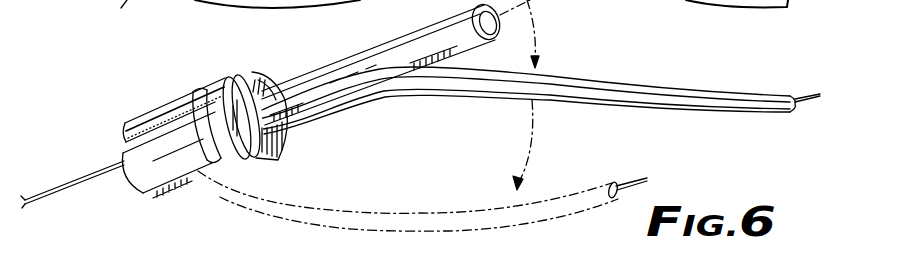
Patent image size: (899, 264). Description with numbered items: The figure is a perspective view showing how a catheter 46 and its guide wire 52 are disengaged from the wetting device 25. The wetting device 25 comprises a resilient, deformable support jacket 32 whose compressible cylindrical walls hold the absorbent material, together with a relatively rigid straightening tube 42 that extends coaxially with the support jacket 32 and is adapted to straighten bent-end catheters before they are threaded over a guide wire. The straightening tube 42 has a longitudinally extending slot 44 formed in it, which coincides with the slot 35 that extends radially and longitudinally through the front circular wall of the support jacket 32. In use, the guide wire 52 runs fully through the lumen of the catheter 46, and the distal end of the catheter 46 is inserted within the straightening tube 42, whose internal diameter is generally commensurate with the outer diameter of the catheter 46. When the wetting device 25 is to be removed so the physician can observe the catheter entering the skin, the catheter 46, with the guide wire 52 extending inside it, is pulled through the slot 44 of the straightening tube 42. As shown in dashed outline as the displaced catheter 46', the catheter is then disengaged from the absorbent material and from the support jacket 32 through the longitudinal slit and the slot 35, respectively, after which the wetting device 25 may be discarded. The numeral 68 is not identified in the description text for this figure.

The hub of assembly 68 is at (112, 16).
The wetting device 25 is at (225, 68).
The support jacket 32 is at (178, 101).
The guide wire 52 is at (88, 177).
The slot 35 is at (223, 166).
The straightening tube 42 is at (383, 46).
The slot 44 is at (471, 43).
The catheter 46 is at (541, 88).
The catheter 46' is at (422, 190).